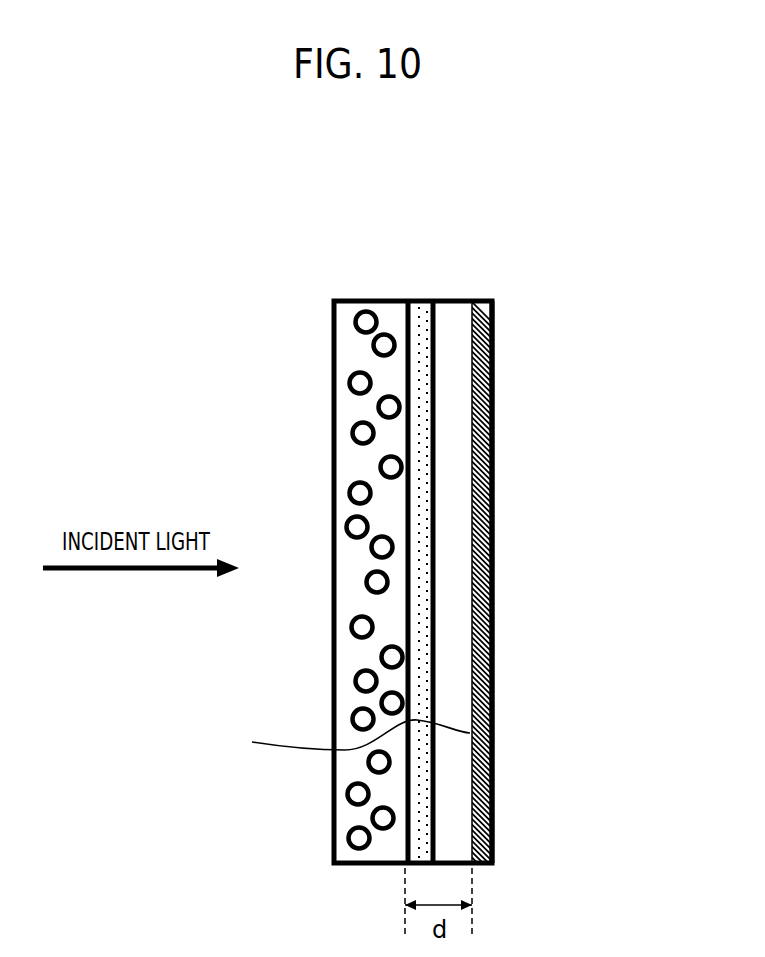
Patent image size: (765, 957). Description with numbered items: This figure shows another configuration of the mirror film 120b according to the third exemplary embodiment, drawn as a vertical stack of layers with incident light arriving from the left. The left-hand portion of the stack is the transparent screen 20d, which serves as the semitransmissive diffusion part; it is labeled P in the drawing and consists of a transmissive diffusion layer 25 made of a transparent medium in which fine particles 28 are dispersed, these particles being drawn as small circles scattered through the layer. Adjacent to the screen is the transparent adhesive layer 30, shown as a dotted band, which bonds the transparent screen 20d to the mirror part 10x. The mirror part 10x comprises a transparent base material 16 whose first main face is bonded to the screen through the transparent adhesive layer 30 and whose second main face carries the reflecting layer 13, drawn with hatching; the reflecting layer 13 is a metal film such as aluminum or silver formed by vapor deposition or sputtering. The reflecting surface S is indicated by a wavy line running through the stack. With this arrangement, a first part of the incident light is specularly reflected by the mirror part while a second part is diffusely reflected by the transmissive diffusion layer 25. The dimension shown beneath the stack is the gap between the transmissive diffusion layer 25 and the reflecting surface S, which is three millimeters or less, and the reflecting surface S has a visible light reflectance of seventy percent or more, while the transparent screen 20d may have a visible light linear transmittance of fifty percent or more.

The mirror part 10x is at (530, 232).
The reflecting layer 13 is at (480, 298).
The transparent base material 16 is at (444, 298).
The transparent screen 20d is at (405, 232).
The transmissive diffusion layer 25 is at (352, 298).
The fine particles 28 is at (348, 383).
The transparent adhesive layer 30 is at (416, 298).
The mirror film 120b is at (492, 876).
The panel P is at (333, 321).
The reflecting surface S is at (349, 738).